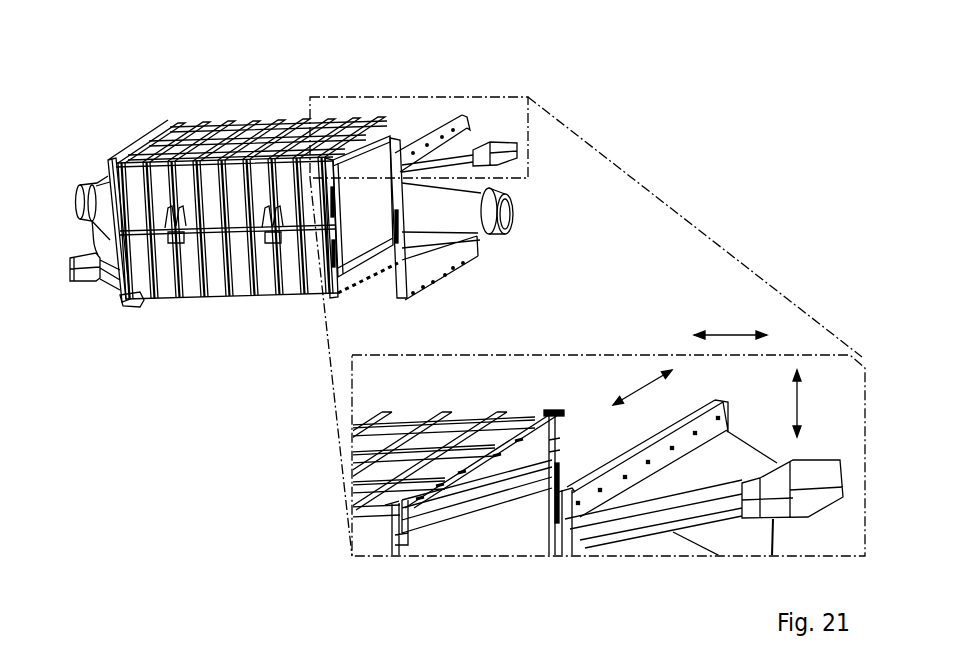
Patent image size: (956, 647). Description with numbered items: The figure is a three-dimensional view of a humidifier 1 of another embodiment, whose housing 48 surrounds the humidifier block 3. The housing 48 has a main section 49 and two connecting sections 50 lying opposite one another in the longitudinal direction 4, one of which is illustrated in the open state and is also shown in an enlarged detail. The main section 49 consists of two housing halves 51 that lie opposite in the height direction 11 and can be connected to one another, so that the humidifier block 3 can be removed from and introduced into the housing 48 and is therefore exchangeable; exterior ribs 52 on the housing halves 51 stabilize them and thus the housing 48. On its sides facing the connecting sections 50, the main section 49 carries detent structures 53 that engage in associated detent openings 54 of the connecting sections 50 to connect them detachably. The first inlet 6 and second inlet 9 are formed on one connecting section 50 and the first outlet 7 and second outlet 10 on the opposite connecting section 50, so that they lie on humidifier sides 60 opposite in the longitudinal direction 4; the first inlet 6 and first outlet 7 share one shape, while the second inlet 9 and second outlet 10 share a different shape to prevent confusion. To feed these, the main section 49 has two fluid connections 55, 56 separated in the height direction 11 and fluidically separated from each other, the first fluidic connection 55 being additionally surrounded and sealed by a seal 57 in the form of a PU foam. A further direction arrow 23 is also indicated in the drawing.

The humidifier 1 is at (617, 122).
The humidifier block 3 is at (517, 540).
The longitudinal direction 4 is at (730, 332).
The first inlet 6 is at (515, 212).
The first outlet 7 is at (113, 218).
The second inlet 9 is at (517, 152).
The second outlet 10 is at (62, 268).
The height direction 11 is at (800, 402).
The transverse direction 23 is at (641, 386).
The housing 48 is at (279, 102).
The main section 49 is at (238, 112).
The connecting sections 50 is at (158, 125).
The housing halves 51 is at (200, 137).
The exterior ribs 52 is at (147, 140).
The detent structures 53 is at (362, 282).
The detent openings 54 is at (447, 279).
The first fluidic connection 55 is at (537, 497).
The second fluidic connection 56 is at (557, 450).
The seal 57 is at (460, 530).
The humidifier sides 60 is at (118, 297).